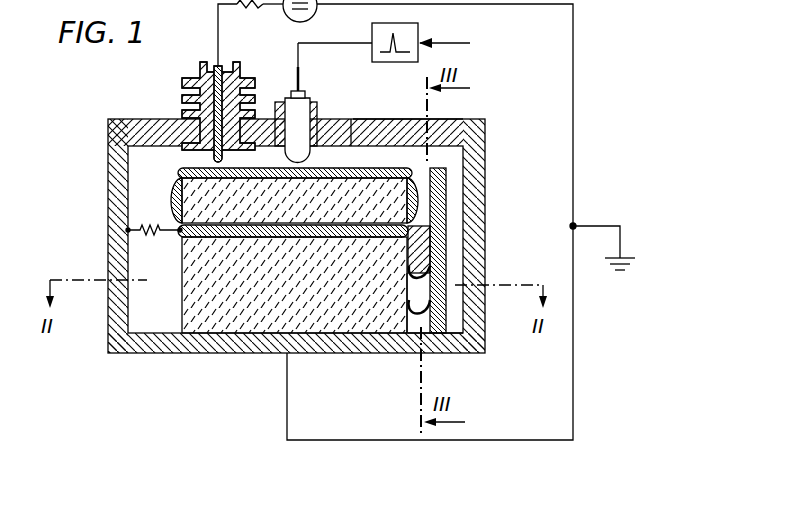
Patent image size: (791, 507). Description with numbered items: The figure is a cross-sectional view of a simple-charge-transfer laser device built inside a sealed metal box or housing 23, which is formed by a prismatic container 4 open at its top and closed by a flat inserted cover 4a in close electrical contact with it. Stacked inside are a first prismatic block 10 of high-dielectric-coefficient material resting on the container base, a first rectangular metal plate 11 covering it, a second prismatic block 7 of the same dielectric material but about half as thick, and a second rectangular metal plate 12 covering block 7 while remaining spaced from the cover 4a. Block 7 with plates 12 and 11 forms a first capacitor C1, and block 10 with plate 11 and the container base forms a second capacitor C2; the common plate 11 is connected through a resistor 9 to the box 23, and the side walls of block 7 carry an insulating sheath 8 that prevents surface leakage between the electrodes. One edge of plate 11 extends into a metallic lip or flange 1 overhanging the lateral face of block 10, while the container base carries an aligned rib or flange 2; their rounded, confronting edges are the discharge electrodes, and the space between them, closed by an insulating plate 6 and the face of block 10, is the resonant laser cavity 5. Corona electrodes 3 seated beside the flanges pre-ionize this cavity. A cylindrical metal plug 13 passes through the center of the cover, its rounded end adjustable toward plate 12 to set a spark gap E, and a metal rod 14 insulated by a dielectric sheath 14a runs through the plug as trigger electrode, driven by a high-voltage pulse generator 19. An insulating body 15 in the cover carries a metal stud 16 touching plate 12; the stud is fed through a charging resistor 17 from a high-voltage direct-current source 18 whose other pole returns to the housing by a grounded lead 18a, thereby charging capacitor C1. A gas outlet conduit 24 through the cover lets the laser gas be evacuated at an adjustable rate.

The metallic lip or flange 1 is at (418, 250).
The longitudinal metal rib or flange 2 is at (446, 350).
The corona electrodes 3 is at (407, 292).
The prismatic container 4 is at (450, 176).
The flat inserted cover 4a is at (457, 136).
The resonant laser cavity 5 is at (422, 286).
The insulating plate 6 is at (416, 300).
The second prismatic block 7 is at (353, 205).
The insulating sheath 8 is at (178, 205).
The resistor 9 is at (148, 233).
The first prismatic block 10 is at (268, 292).
The first rectangular metal plate 11 is at (237, 237).
The second rectangular metal plate 12 is at (371, 166).
The cylindrical metal plug 13 is at (303, 112).
The metal rod 14 is at (302, 88).
The dielectric sheath 14a is at (307, 95).
The insulating body 15 is at (183, 84).
The metal stud 16 is at (215, 162).
The charging resistor 17 is at (248, 10).
The high-voltage direct-current source 18 is at (316, 12).
The grounded lead 18a is at (573, 85).
The high-voltage pulse generator 19 is at (418, 27).
The sealed metal box or housing 23 is at (341, 360).
The gas outlet conduit 24 is at (352, 146).
The spark gap E is at (310, 163).
The first capacitor C1 is at (165, 190).
The second capacitor C2 is at (172, 281).